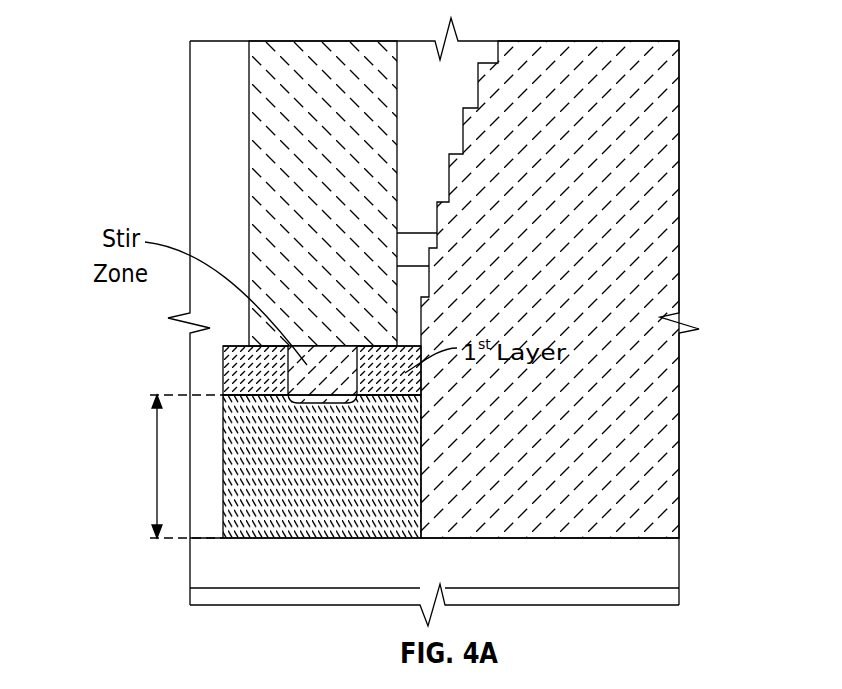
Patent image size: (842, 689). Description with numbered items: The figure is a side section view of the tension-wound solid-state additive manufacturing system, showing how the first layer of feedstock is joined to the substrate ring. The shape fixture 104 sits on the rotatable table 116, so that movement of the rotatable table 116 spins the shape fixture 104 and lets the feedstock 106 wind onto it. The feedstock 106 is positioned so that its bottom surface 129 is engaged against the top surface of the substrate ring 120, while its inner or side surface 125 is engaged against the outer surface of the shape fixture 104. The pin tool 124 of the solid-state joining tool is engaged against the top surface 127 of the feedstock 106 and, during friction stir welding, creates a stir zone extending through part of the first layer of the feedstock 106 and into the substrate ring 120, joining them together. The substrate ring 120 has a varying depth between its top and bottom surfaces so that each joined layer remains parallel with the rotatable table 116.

The shape fixture 104 is at (607, 63).
The pin tool 124 is at (330, 62).
The feedstock 106 is at (243, 373).
The top surface of the feedstock 127 is at (217, 337).
The bottom surface of the feedstock 129 is at (223, 395).
The side surface of the feedstock 125 is at (223, 395).
The substrate ring 120 is at (241, 458).
The rotatable table 116 is at (213, 565).